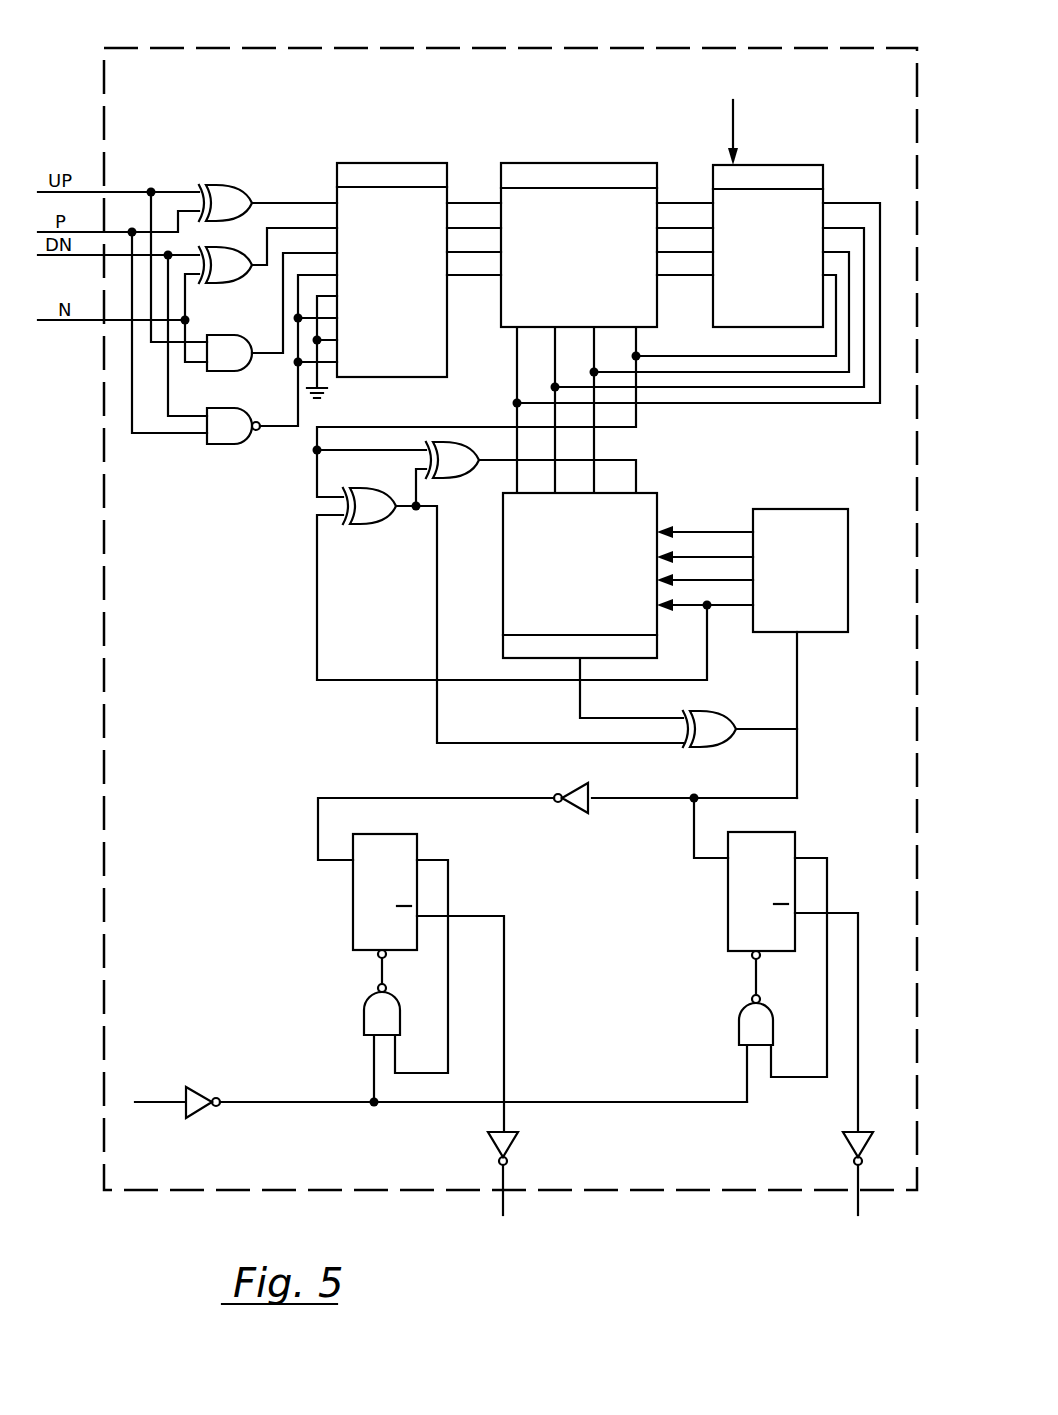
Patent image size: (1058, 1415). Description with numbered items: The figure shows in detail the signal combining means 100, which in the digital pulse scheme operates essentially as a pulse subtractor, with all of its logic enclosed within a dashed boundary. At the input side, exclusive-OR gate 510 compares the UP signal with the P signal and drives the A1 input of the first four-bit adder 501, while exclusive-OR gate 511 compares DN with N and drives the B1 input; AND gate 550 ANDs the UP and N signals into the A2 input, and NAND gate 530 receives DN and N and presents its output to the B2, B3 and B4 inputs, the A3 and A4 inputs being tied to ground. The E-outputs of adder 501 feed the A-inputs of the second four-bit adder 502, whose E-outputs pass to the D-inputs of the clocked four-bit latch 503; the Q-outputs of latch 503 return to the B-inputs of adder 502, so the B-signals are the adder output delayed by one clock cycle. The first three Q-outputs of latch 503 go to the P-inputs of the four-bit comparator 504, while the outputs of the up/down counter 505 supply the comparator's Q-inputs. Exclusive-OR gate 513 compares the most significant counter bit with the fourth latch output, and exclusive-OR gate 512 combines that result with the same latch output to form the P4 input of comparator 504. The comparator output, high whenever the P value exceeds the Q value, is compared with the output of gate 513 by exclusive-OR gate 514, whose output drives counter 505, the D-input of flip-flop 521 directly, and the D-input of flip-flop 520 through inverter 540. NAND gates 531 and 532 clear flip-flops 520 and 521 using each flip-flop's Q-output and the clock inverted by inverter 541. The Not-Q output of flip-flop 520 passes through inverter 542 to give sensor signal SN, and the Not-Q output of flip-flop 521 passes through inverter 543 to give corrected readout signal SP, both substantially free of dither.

The signal combining means 100 is at (773, 48).
The four-bit adder 501 is at (383, 163).
The four-bit adder 502 is at (574, 163).
The four-bit latch 503 is at (766, 165).
The four-bit comparator 504 is at (648, 493).
The counter 505 is at (785, 509).
The exclusive-OR gate 510 is at (211, 183).
The exclusive-OR gate 511 is at (226, 283).
The exclusive-OR gate 512 is at (440, 442).
The exclusive-OR gate 513 is at (366, 525).
The exclusive-OR gate 514 is at (714, 712).
The flip-flop 520 is at (353, 905).
The flip-flop 521 is at (728, 904).
The NAND gate 530 is at (233, 444).
The NAND gate 531 is at (363, 1018).
The NAND gate 532 is at (739, 1027).
The inverter 540 is at (568, 783).
The inverter 541 is at (203, 1092).
The inverter 542 is at (518, 1142).
The inverter 543 is at (843, 1142).
The AND gate 550 is at (225, 372).